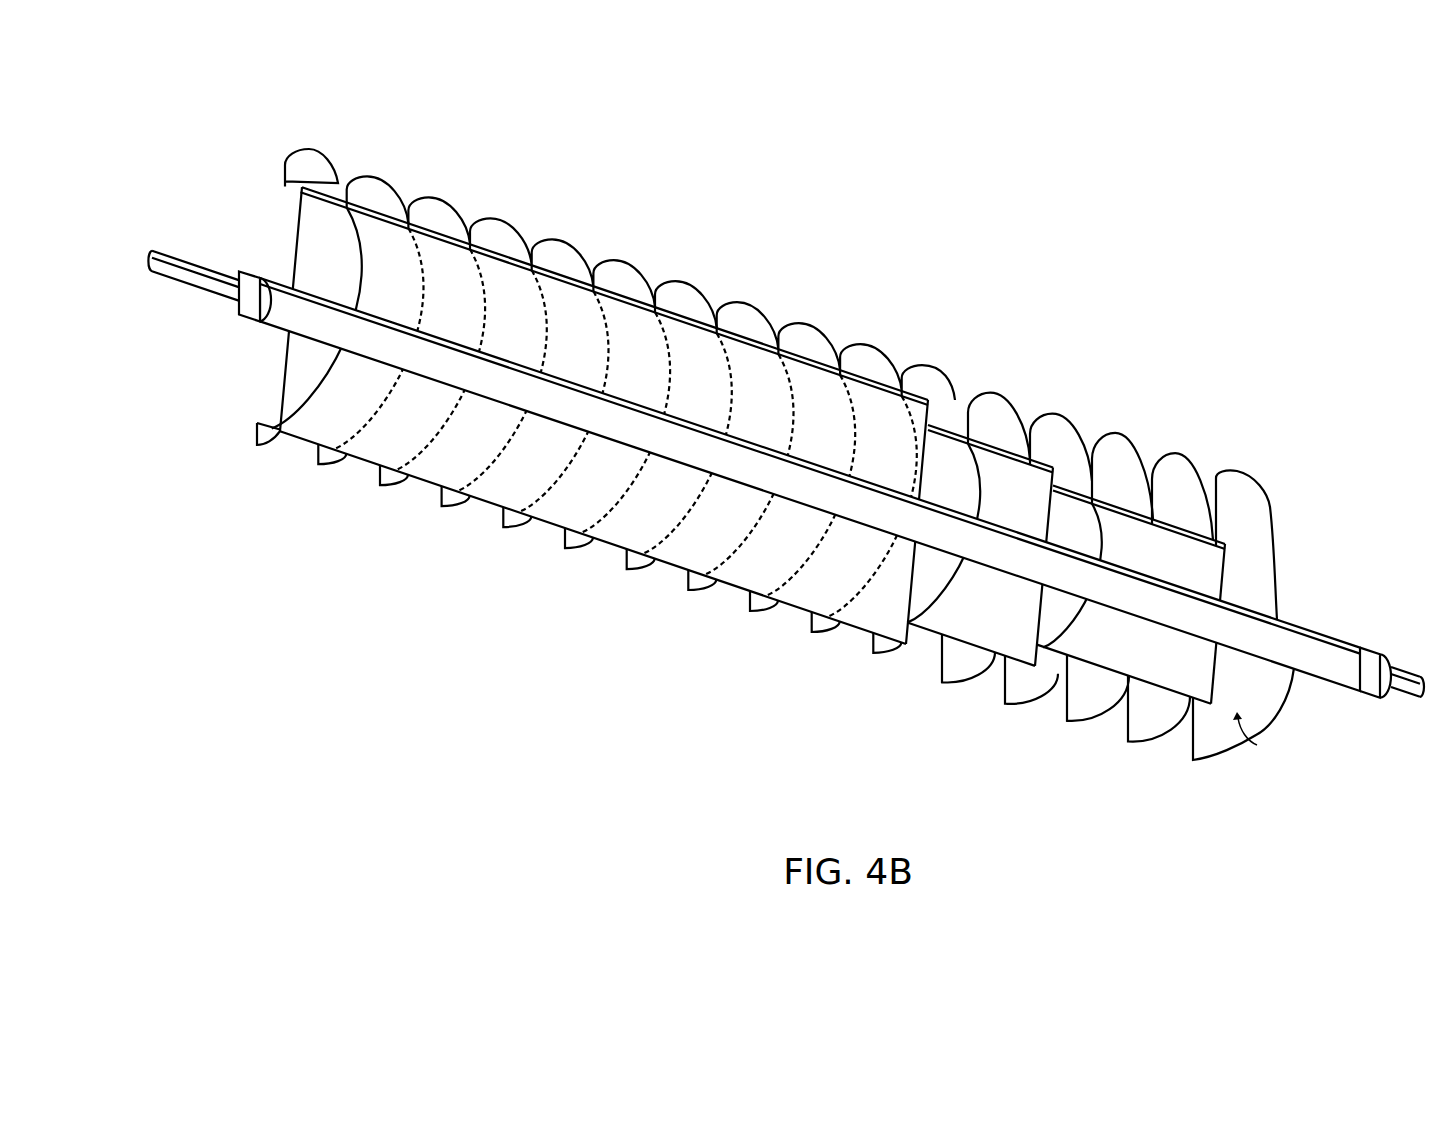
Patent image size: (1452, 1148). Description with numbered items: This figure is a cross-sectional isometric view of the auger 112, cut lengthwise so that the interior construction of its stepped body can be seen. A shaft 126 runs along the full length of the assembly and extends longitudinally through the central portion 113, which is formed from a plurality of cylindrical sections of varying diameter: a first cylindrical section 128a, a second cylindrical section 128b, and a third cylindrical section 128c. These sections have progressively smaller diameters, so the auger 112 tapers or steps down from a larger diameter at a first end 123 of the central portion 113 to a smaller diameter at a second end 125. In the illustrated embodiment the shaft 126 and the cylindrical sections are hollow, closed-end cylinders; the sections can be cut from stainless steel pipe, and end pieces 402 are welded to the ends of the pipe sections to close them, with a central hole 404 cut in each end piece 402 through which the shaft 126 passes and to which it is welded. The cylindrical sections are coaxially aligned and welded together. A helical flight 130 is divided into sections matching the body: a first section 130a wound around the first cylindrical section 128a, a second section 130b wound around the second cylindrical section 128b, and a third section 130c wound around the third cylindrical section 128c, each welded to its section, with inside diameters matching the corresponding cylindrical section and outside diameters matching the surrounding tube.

The first end 123 is at (209, 165).
The auger 112 is at (808, 243).
The shaft 126 is at (1340, 635).
The first cylindrical section 128a is at (532, 258).
The second cylindrical section 128b is at (1020, 450).
The third cylindrical section 128c is at (1198, 530).
The flight 130 is at (372, 184).
The first section of the flight 130a is at (677, 288).
The second section of the flight 130b is at (978, 397).
The third section of the flight 130c is at (1168, 462).
The end piece 402 is at (297, 352).
The central hole 404 is at (912, 540).
The central portion 113 is at (1240, 676).
The second end 125 is at (1267, 734).